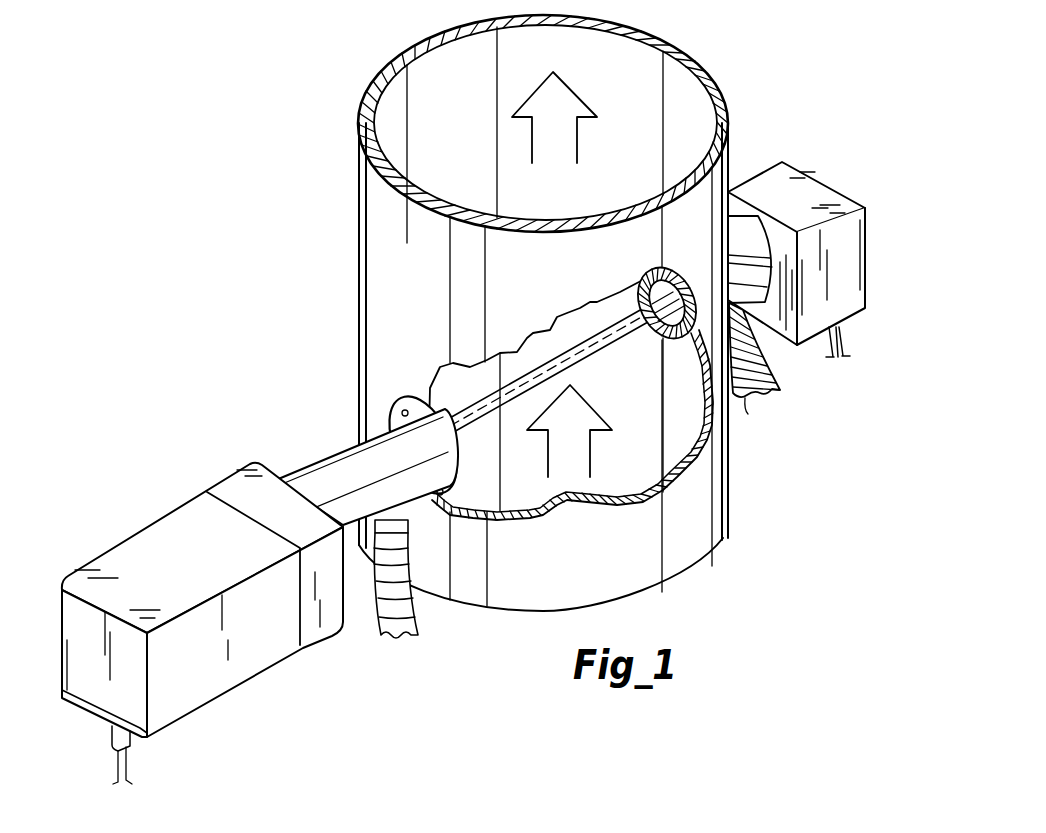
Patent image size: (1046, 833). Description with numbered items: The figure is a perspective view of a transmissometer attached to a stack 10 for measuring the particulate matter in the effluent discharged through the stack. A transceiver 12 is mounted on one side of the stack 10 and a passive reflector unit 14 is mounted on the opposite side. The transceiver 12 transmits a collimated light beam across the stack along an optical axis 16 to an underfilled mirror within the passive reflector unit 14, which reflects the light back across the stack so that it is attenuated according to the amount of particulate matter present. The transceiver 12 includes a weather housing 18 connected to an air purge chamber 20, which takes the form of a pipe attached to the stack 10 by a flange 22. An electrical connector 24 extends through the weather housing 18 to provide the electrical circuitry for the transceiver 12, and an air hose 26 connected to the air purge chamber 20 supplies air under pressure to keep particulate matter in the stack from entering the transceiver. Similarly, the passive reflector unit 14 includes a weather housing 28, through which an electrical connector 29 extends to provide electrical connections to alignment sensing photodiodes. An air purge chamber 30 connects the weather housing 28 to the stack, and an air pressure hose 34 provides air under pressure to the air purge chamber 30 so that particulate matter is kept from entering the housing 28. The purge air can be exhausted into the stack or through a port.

The stack 10 is at (369, 250).
The transceiver 12 is at (266, 568).
The passive reflector unit 14 is at (800, 150).
The optical axis 16 is at (505, 405).
The weather housing 18 is at (245, 665).
The air purge chamber 20 is at (347, 465).
The flange 22 is at (395, 410).
The electrical connector 24 is at (120, 745).
The air hose 26 is at (378, 637).
The weather housing 28 is at (819, 325).
The electrical connector 29 is at (850, 345).
The air purge chamber 30 is at (740, 213).
The air pressure hose 34 is at (743, 413).